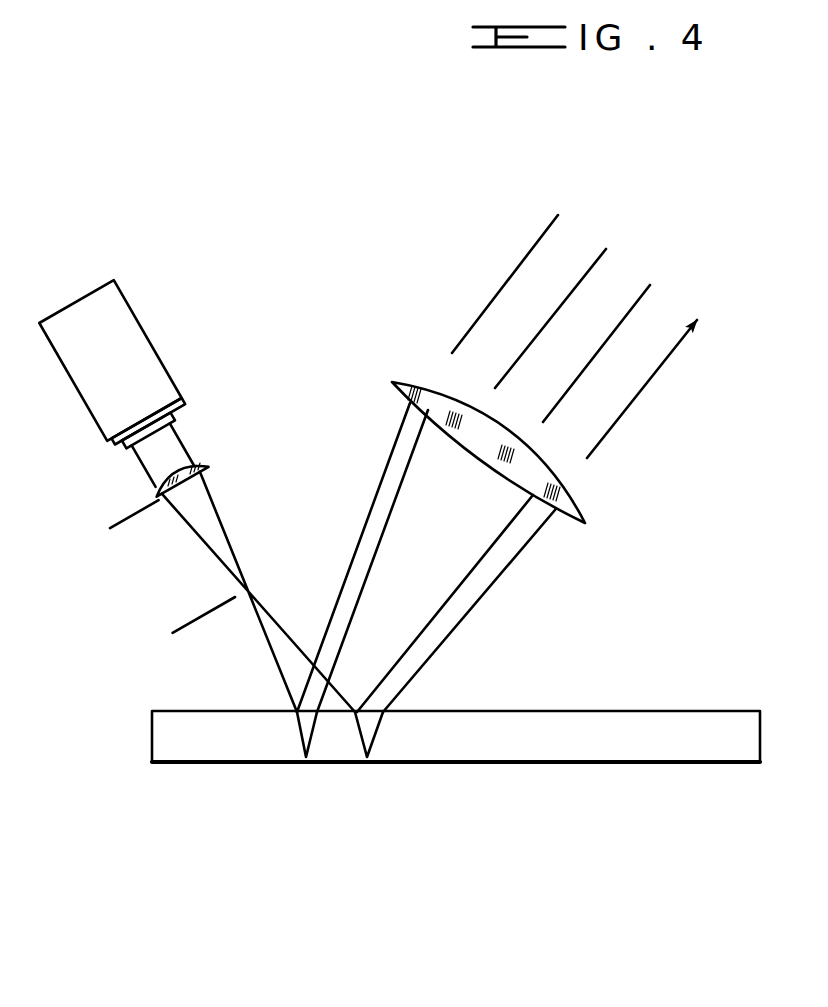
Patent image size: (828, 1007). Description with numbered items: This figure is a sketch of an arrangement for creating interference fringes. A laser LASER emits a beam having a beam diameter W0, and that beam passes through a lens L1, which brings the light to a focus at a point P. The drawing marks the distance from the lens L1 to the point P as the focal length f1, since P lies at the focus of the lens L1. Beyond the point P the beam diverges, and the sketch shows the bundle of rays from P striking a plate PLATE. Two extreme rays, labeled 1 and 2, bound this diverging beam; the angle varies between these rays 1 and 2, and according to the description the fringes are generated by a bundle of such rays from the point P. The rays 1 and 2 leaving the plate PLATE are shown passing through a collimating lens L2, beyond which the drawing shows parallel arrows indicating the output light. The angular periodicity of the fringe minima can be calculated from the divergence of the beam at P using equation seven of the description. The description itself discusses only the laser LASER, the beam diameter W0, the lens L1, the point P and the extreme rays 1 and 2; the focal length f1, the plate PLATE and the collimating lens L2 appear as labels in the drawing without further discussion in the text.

The laser LASER is at (228, 209).
The beam diameter W0 is at (123, 483).
The lens L1 is at (212, 463).
The focal length of lens L1 f1 is at (134, 516).
The point at the focus of the lens P is at (258, 592).
The plate with grooves PLATE is at (240, 764).
The extreme ray 1 is at (362, 557).
The extreme ray 2 is at (456, 603).
The collimating lens L2 is at (571, 526).